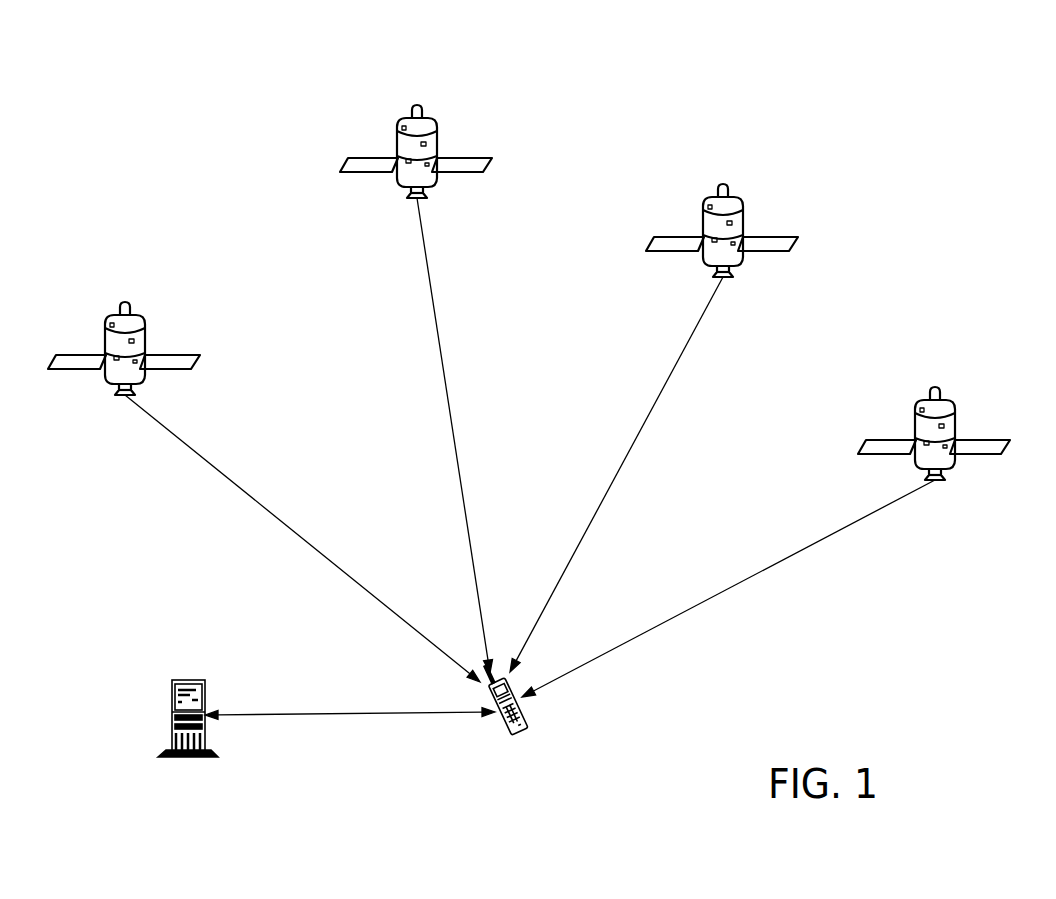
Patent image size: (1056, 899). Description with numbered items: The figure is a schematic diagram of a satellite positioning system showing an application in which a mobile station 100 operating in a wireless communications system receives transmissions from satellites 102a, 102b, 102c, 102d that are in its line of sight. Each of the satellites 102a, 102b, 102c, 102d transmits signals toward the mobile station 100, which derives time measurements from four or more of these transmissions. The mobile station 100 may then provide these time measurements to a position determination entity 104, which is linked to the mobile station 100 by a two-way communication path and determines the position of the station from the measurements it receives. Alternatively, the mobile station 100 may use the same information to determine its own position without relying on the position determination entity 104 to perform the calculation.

The mobile station 100 is at (502, 740).
The satellite 102a is at (128, 300).
The satellite 102b is at (420, 103).
The satellite 102c is at (725, 182).
The satellite 102d is at (935, 387).
The position determination entity 104 is at (193, 680).